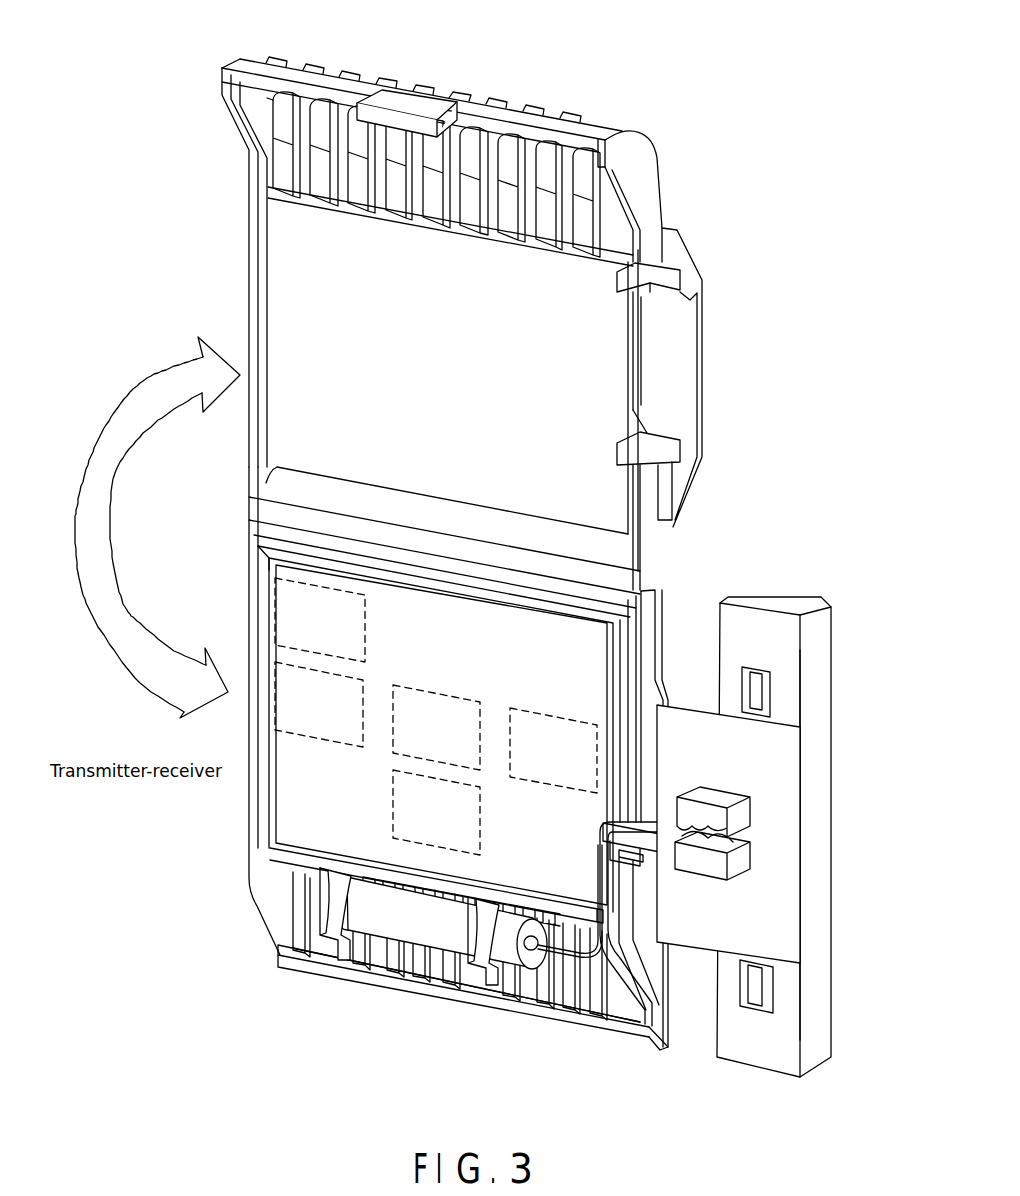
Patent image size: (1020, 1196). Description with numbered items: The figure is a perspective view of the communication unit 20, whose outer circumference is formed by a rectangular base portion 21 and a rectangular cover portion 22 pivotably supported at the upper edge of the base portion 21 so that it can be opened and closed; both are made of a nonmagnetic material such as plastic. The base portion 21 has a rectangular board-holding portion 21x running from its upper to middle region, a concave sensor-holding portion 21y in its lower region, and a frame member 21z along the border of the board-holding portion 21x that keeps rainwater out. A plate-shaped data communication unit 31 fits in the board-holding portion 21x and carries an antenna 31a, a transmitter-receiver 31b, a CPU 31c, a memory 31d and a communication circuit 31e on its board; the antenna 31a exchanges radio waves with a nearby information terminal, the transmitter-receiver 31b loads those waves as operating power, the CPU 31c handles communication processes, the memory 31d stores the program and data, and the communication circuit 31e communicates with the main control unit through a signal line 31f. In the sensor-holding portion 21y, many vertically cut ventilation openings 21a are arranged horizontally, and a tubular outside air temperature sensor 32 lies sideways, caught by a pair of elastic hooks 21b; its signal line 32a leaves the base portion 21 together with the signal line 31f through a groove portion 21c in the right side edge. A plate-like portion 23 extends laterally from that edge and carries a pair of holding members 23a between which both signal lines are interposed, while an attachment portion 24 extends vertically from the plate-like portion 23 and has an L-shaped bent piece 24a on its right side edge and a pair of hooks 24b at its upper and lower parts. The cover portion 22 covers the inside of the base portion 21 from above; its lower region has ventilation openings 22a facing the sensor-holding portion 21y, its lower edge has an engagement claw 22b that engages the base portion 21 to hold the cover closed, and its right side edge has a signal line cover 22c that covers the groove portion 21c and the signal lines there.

The communication unit 20 is at (737, 160).
The base portion 21 is at (248, 830).
The ventilation openings 21a is at (400, 950).
The elastic hooks 21b is at (332, 942).
The groove portion 21c is at (620, 845).
The board-holding portion 21x is at (258, 572).
The sensor-holding portion 21y is at (358, 960).
The frame member 21z is at (255, 615).
The cover portion 22 is at (248, 268).
The ventilation openings 22a is at (315, 130).
The engagement claw 22b is at (405, 105).
The signal line cover 22c is at (688, 344).
The plate-like portion 23 is at (680, 720).
The holding members 23a is at (712, 805).
The attachment portion 24 is at (762, 614).
The bent piece 24a is at (808, 822).
The hooks 24b is at (762, 692).
The data communication unit 31 is at (648, 592).
The antenna 31a is at (368, 628).
The transmitter-receiver 31b is at (270, 722).
The CPU 31c is at (455, 697).
The memory 31d is at (392, 818).
The communication circuit 31e is at (590, 720).
The signal line 31f is at (656, 832).
The outside air temperature sensor 32 is at (442, 930).
The signal line 32a is at (565, 955).